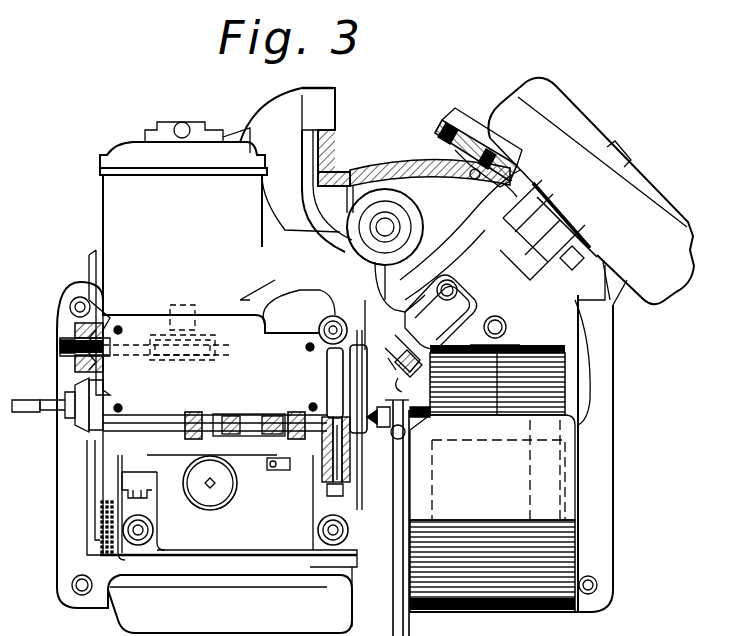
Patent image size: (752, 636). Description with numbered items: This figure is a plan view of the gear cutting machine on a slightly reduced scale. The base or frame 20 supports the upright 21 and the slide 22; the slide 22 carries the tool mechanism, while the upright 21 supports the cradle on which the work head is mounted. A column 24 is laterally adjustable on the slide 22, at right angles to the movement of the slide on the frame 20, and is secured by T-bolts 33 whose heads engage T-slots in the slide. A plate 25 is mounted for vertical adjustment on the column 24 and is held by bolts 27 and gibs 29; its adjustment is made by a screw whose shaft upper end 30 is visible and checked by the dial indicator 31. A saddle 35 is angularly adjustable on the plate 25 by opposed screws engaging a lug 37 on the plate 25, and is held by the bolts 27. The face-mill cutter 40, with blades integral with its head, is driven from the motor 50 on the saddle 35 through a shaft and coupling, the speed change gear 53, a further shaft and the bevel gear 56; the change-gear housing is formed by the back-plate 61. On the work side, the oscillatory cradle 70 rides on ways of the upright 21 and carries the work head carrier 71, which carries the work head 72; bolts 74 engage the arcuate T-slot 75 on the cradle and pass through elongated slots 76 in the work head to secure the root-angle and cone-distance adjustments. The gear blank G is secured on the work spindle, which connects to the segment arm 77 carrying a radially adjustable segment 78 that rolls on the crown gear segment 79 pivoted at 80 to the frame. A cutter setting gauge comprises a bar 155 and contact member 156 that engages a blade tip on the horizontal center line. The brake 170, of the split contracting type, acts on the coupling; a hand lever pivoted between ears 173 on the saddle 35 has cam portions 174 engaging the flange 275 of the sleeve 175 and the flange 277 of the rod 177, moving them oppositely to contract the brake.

The base or frame 20 is at (62, 498).
The upright 21 is at (570, 495).
The slide 22 is at (100, 545).
The column 24 is at (235, 510).
The plate 25 is at (130, 458).
The bolts 27 is at (342, 496).
The gibs 29 is at (350, 478).
The upper end of adjusting screw shaft 30 is at (216, 483).
The dial indicator 31 is at (216, 505).
The T-bolts 33 is at (325, 320).
The saddle 35 is at (243, 335).
The lug 37 is at (250, 414).
The face-mill cutter 40 is at (393, 360).
The gear blank G is at (387, 357).
The motor 50 is at (103, 206).
The speed change gear 53 is at (215, 430).
The bevel gear 56 is at (195, 418).
The back-plate 61 is at (233, 577).
The oscillatory cradle 70 is at (550, 412).
The work head carrier 71 is at (591, 191).
The work head 72 is at (405, 308).
The bolts 74 is at (458, 296).
The arcuate T-slot 75 is at (415, 272).
The elongated slots 76 is at (484, 333).
The segment arm 77 is at (460, 142).
The radially adjustable segment 78 is at (398, 163).
The crown gear segment 79 is at (336, 150).
The pivot 80 is at (385, 235).
The bar 155 is at (395, 612).
The contact member 156 is at (392, 428).
The brake 170 is at (215, 350).
The ears 173 is at (103, 382).
The cam portions 174 is at (75, 325).
The sleeve 175 is at (105, 325).
The rod 177 is at (100, 362).
The flange 275 is at (170, 322).
The flange 277 is at (60, 346).